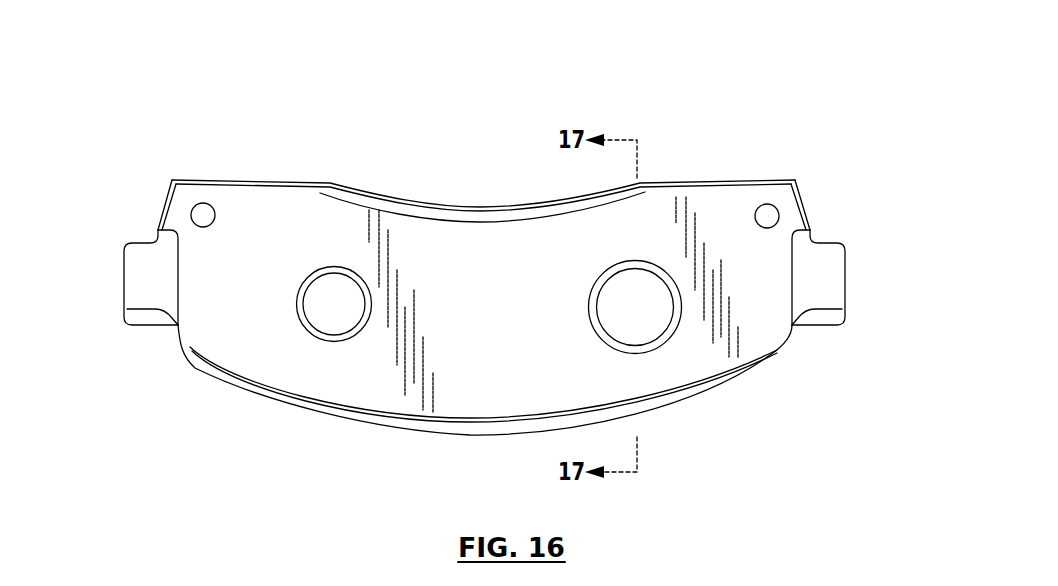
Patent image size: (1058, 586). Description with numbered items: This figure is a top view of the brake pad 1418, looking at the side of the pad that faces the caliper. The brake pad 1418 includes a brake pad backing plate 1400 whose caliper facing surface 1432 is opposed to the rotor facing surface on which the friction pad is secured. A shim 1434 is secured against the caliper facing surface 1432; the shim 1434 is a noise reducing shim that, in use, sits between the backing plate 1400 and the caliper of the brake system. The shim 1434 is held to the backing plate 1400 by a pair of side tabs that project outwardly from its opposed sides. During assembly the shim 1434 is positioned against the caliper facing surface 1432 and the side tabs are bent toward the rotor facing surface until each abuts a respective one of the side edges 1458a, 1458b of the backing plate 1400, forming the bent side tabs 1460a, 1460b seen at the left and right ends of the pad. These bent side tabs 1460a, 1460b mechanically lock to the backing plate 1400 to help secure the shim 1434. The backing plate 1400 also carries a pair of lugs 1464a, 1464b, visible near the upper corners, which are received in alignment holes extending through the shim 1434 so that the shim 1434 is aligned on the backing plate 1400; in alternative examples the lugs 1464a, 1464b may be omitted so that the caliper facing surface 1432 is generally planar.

The brake pad 1418 is at (502, 220).
The brake pad backing plate 1400 is at (820, 287).
The caliper facing surface 1432 is at (393, 205).
The shim 1434 is at (748, 327).
The side edge 1458a is at (160, 236).
The side edge 1458b is at (810, 232).
The bent side tab 1460a is at (166, 201).
The bent side tab 1460b is at (806, 199).
The lug 1464a is at (203, 212).
The lug 1464b is at (768, 213).